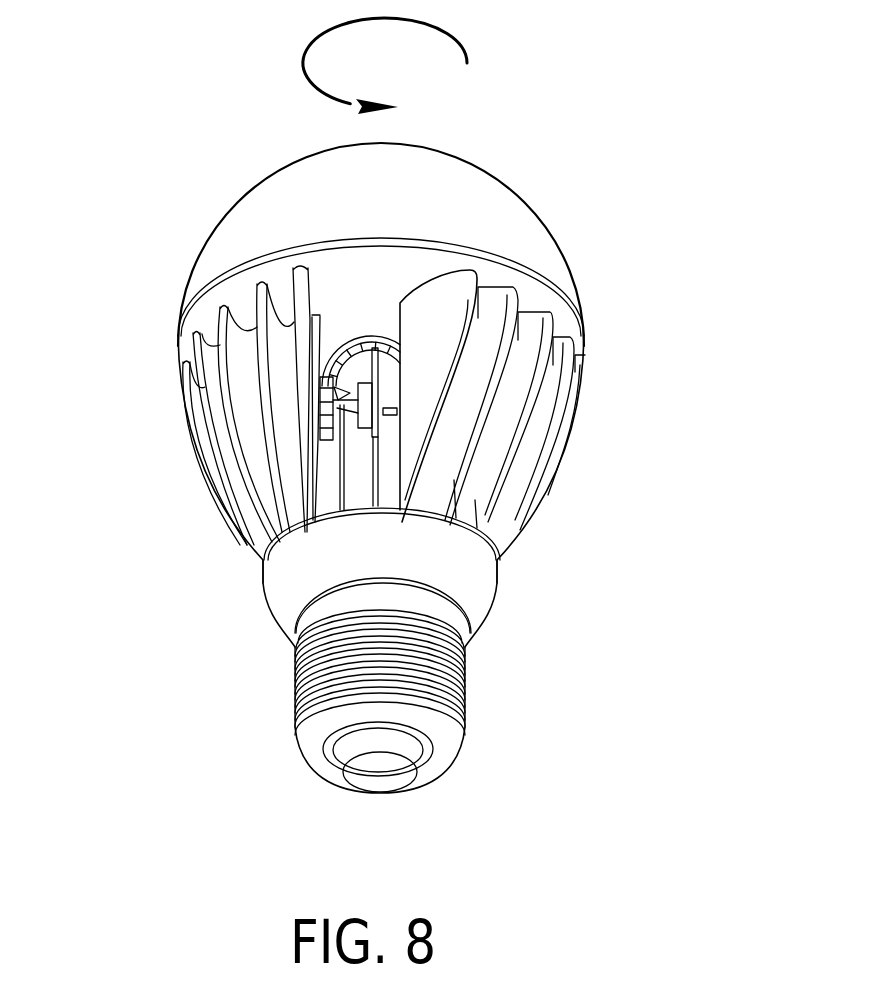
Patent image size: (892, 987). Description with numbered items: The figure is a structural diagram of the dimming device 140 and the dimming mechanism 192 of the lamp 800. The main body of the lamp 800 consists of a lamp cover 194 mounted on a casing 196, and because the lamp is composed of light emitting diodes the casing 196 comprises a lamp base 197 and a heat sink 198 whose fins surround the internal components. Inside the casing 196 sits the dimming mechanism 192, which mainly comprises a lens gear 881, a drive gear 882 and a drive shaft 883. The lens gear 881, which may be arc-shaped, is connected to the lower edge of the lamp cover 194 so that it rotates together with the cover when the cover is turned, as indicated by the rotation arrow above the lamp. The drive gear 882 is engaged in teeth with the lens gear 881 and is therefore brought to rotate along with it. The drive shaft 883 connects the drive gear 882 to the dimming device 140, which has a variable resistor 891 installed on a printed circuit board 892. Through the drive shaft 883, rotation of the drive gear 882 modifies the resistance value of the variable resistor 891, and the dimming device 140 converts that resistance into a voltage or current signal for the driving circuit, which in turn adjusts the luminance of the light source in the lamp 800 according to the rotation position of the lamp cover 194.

The lamp 800 is at (543, 202).
The lamp cover 194 is at (263, 207).
The heat sink 198 is at (533, 415).
The lamp base 197 is at (477, 642).
The casing 196 is at (653, 427).
The dimming mechanism 192 is at (100, 437).
The lens gear 881 is at (322, 361).
The drive gear 882 is at (330, 420).
The drive shaft 883 is at (378, 430).
The dimming device 140 is at (658, 330).
The variable resistor 891 is at (378, 396).
The printed circuit board 892 is at (397, 418).